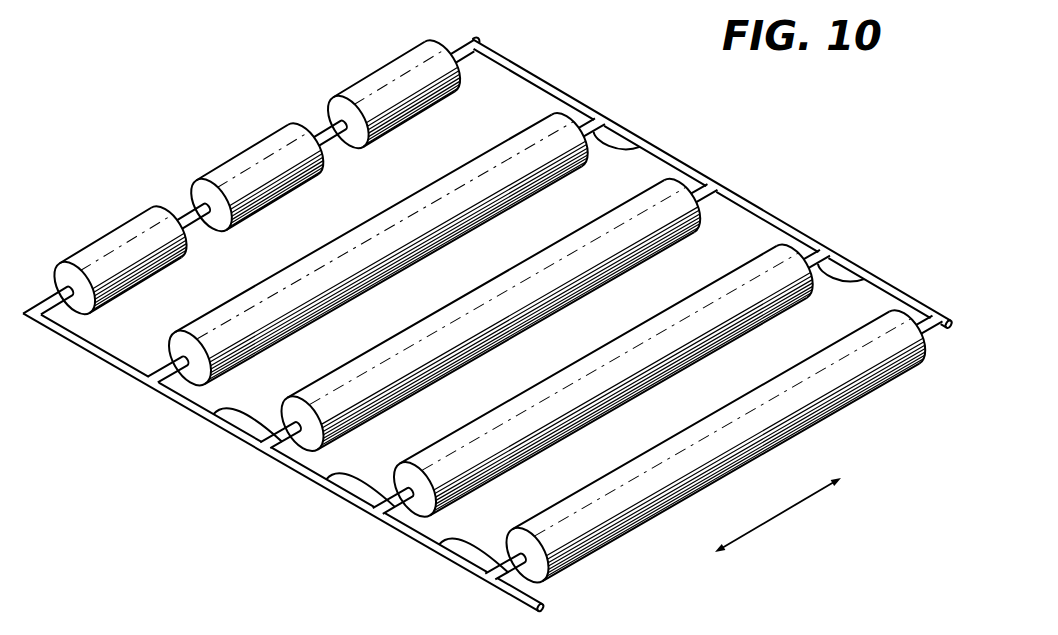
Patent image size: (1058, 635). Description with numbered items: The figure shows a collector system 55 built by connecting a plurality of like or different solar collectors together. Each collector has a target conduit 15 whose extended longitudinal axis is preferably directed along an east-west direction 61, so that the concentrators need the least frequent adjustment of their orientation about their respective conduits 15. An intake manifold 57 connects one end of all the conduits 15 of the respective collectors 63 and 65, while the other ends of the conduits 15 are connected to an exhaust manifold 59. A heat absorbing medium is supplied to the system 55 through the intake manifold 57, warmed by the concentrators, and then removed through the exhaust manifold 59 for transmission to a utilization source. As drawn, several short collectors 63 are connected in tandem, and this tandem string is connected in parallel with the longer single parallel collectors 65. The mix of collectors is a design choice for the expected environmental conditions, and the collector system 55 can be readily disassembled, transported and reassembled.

The conduit 15 is at (471, 42).
The collector system 55 is at (248, 495).
The intake manifold 57 is at (334, 492).
The exhaust manifold 59 is at (760, 203).
The east-west direction 61 is at (796, 508).
The collector 63 is at (112, 230).
The collector 65 is at (404, 332).